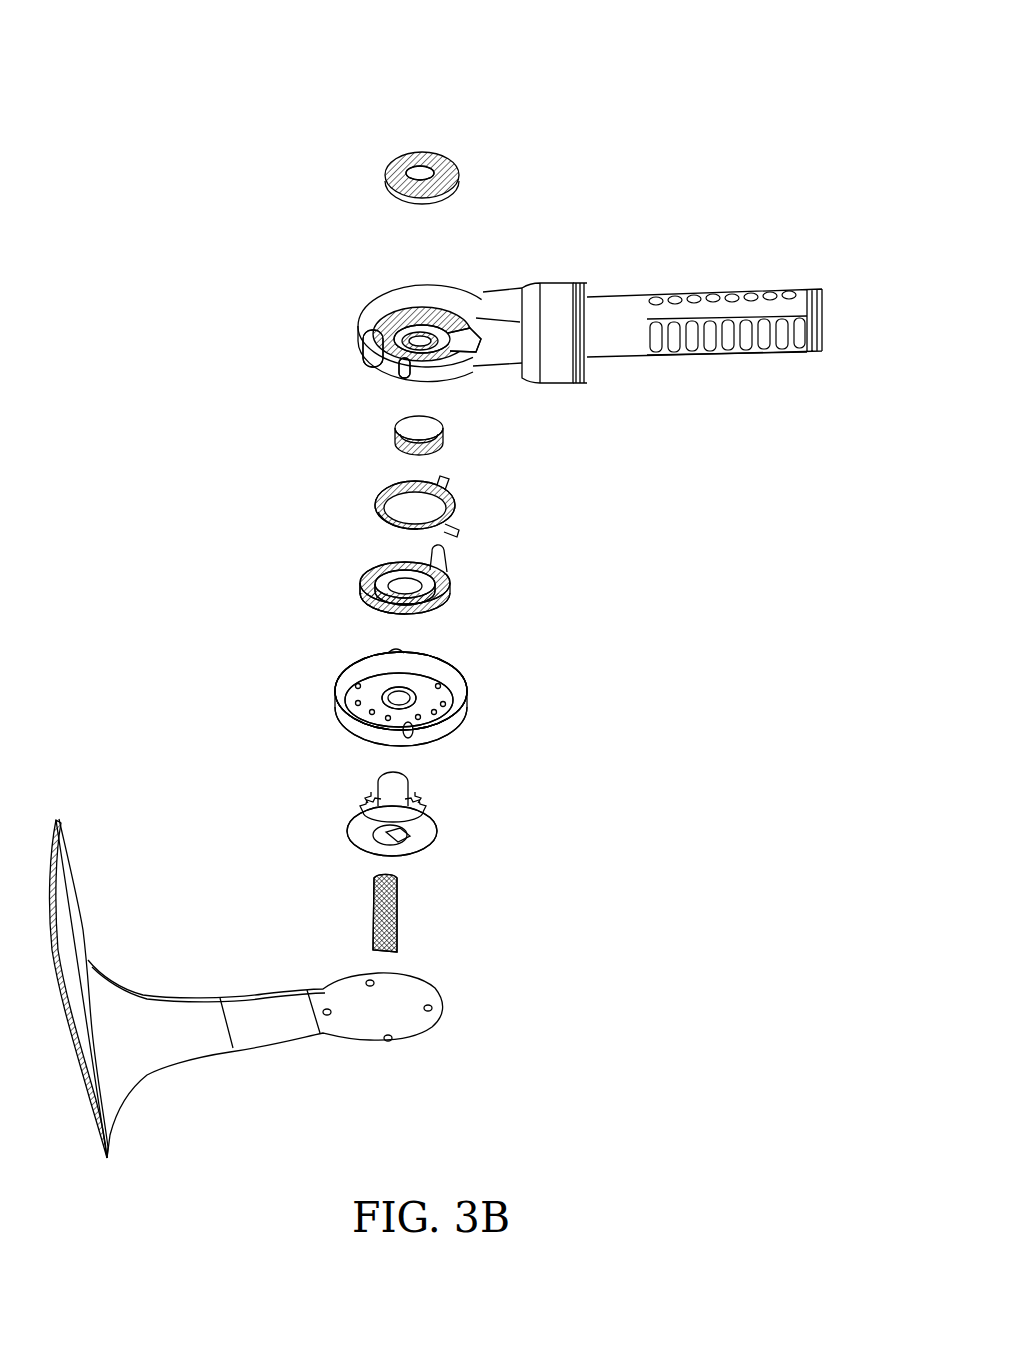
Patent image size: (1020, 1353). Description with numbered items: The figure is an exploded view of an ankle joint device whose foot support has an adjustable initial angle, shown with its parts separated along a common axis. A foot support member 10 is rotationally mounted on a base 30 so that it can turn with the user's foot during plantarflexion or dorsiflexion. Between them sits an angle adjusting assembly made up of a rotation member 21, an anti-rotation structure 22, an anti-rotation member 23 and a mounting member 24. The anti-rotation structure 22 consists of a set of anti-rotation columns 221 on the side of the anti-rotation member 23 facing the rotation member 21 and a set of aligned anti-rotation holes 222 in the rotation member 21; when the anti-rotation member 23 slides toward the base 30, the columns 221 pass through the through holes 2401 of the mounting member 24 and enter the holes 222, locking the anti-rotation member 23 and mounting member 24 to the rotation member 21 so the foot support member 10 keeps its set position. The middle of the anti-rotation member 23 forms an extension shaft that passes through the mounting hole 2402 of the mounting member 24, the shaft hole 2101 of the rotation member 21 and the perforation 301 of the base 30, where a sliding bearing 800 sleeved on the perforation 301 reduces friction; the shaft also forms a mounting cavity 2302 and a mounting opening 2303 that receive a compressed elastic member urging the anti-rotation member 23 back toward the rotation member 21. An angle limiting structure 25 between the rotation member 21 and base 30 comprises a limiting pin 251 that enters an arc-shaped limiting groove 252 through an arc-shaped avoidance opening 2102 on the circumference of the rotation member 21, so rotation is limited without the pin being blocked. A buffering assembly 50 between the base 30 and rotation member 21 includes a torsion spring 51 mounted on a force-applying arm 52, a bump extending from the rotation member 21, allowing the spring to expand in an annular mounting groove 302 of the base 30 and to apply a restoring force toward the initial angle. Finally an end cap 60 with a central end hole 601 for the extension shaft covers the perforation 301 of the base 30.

The foot support member 10 is at (187, 1027).
The rotation member 21 is at (362, 593).
The anti-rotation structure 22 is at (160, 726).
The anti-rotation member 23 is at (438, 833).
The mounting member 24 is at (345, 728).
The angle limiting structure 25 is at (570, 707).
The base 30 is at (500, 320).
The buffering assembly 50 is at (590, 622).
The torsion spring 51 is at (452, 515).
The force-applying arm 52 is at (446, 562).
The end cap 60 is at (423, 166).
The anti-rotation columns 221 is at (362, 802).
The anti-rotation holes 222 is at (382, 618).
The limiting pin 251 is at (462, 682).
The arc-shaped limiting groove 252 is at (404, 364).
The perforation 301 is at (430, 342).
The annular mounting groove 302 is at (456, 332).
The end hole 601 is at (440, 172).
The sliding bearing 800 is at (446, 448).
The shaft hole 2101 is at (397, 578).
The arc-shaped avoidance opening 2102 is at (386, 572).
The mounting cavity 2302 is at (408, 836).
The mounting opening 2303 is at (402, 848).
The through holes 2401 is at (372, 704).
The mounting hole 2402 is at (388, 688).